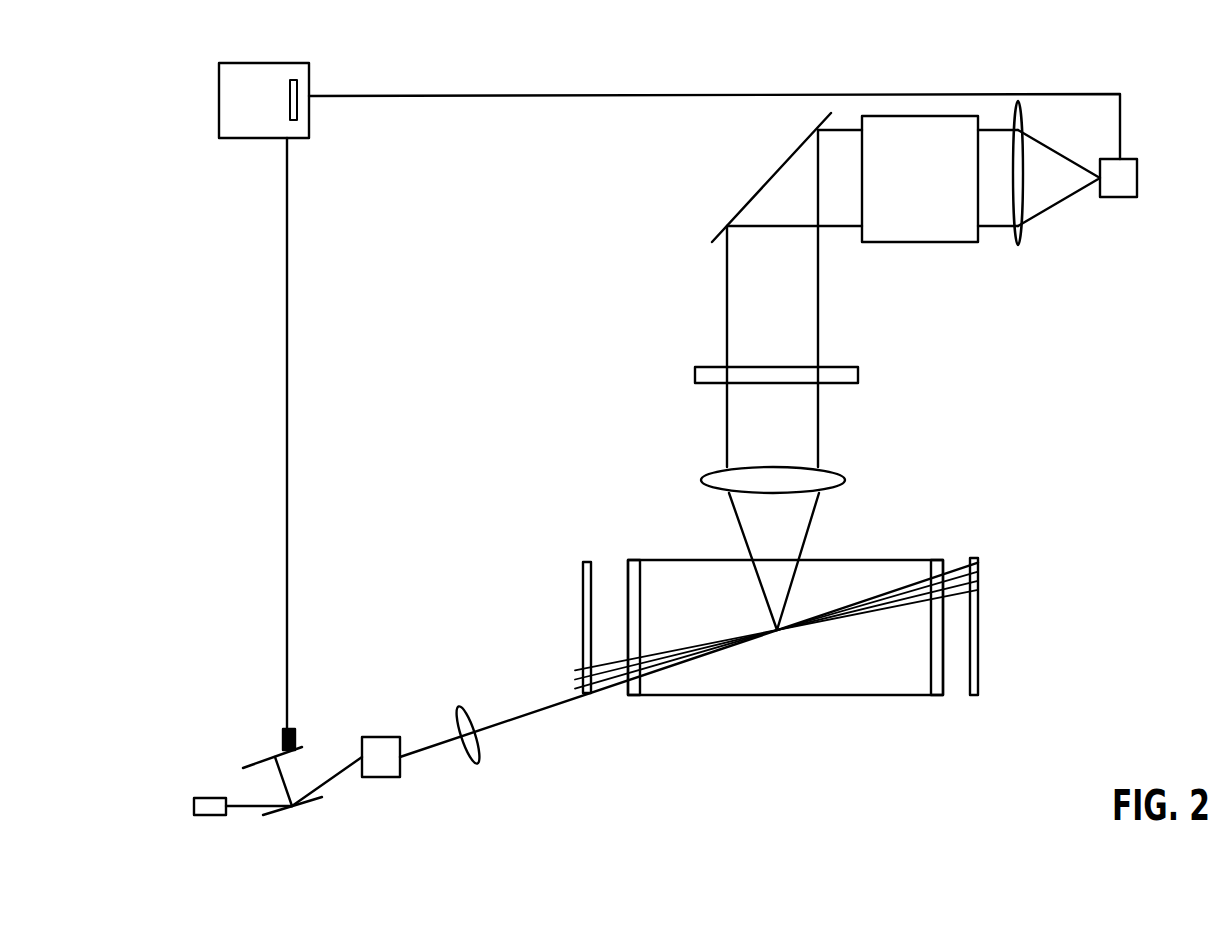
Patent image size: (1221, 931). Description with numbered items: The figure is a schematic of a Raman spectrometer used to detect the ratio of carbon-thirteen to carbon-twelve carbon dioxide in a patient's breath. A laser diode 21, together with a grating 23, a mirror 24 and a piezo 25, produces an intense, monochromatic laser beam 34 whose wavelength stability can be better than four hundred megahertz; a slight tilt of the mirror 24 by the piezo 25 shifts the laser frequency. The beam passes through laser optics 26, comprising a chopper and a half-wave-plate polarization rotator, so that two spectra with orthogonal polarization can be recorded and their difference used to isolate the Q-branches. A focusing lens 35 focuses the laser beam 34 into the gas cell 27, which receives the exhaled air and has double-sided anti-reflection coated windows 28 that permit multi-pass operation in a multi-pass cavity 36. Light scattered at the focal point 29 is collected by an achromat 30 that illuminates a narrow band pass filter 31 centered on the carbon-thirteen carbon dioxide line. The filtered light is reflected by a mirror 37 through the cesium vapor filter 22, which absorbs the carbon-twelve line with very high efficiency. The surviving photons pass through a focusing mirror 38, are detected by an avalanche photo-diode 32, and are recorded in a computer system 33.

The laser diode 21 is at (217, 797).
The cesium vapor filter 22 is at (913, 243).
The grating 23 is at (297, 813).
The mirror 24 is at (271, 753).
The piezo 25 is at (297, 723).
The laser optics 26 is at (380, 736).
The gas cell 27 is at (840, 697).
The anti-reflection coated windows 28 is at (638, 697).
The focal point 29 is at (780, 627).
The achromat 30 is at (847, 475).
The narrow band pass filter 31 is at (858, 372).
The avalanche photo-diode 32 is at (1122, 198).
The computer system 33 is at (243, 140).
The laser beam 34 is at (518, 710).
The focusing lens 35 is at (482, 767).
The multi-pass cavity 36 is at (980, 562).
The mirror 37 is at (736, 215).
The focusing mirror 38 is at (1018, 247).